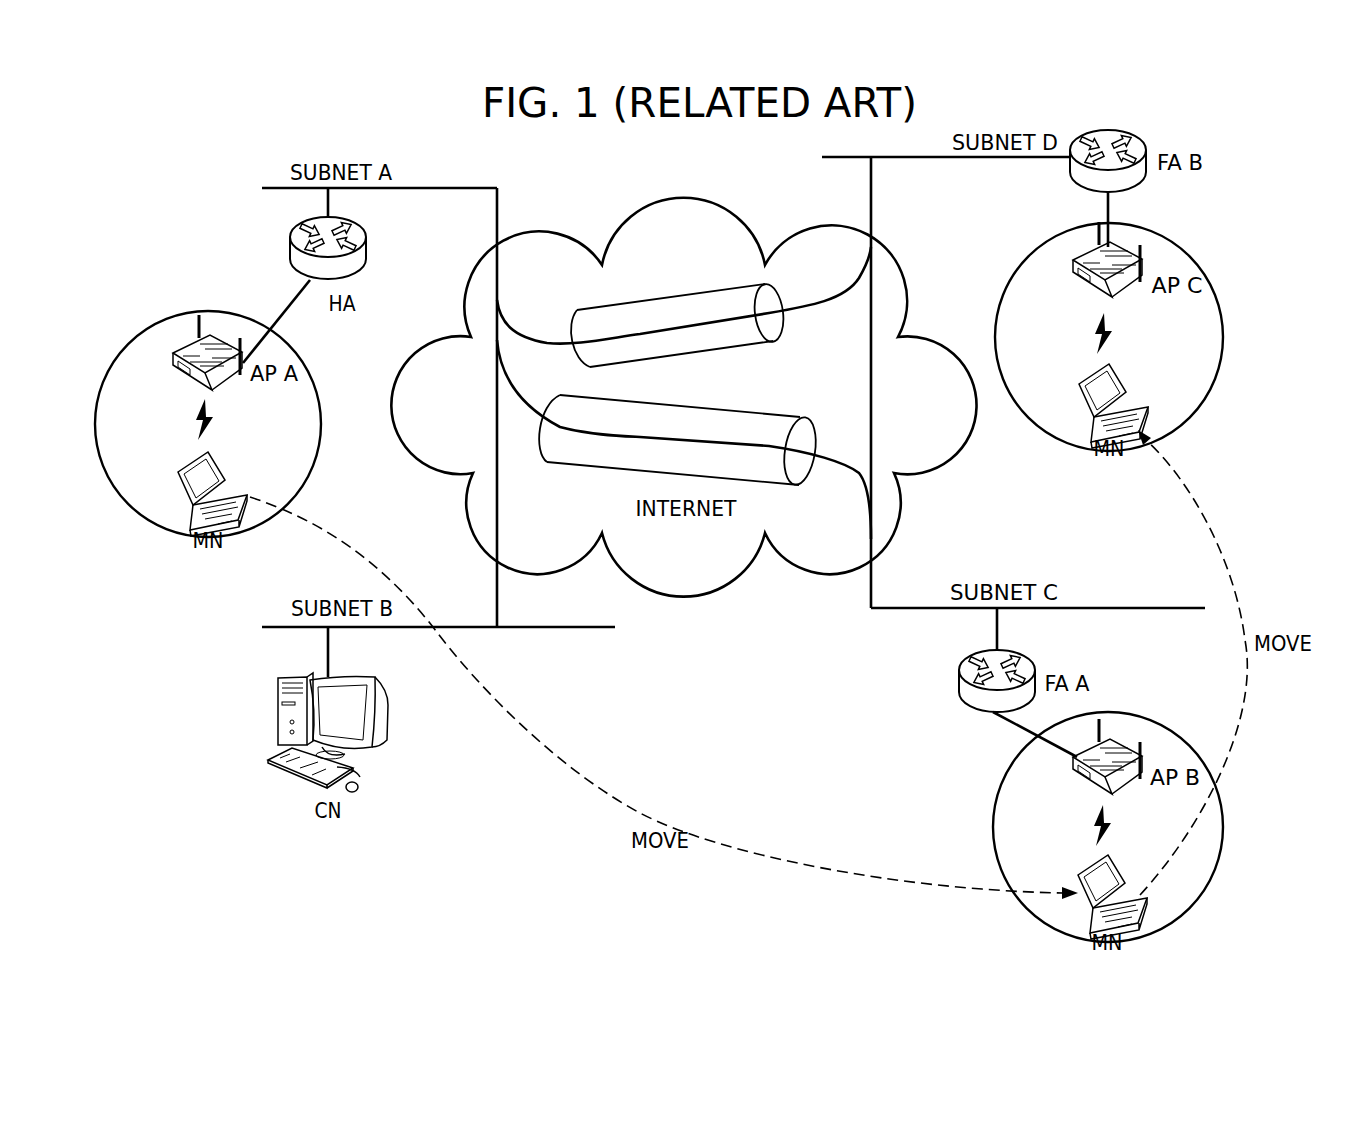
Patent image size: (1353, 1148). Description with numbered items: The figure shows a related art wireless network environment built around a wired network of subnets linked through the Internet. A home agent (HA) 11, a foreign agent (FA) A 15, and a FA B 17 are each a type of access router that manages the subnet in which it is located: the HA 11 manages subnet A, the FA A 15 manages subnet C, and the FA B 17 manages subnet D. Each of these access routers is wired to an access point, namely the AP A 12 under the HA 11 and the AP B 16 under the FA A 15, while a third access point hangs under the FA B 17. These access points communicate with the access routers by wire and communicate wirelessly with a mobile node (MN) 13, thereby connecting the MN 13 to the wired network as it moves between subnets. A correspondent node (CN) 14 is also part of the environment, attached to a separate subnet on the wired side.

The home agent (HA) 11 is at (370, 248).
The access point (AP) A 12 is at (183, 378).
The mobile node (MN) 13 is at (220, 467).
The correspondent node (CN) 14 is at (388, 720).
The foreign agent (FA) A 15 is at (1003, 643).
The AP B 16 is at (1082, 782).
The FA B 17 is at (1110, 123).